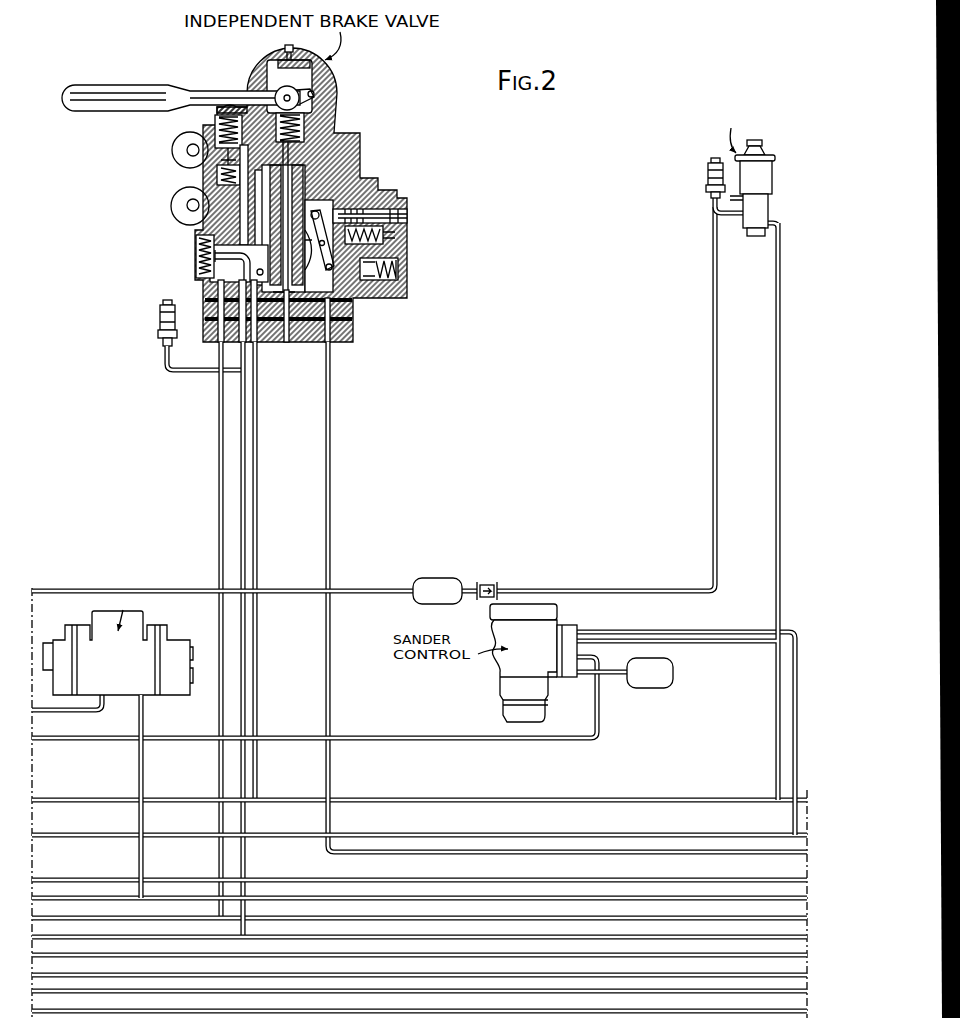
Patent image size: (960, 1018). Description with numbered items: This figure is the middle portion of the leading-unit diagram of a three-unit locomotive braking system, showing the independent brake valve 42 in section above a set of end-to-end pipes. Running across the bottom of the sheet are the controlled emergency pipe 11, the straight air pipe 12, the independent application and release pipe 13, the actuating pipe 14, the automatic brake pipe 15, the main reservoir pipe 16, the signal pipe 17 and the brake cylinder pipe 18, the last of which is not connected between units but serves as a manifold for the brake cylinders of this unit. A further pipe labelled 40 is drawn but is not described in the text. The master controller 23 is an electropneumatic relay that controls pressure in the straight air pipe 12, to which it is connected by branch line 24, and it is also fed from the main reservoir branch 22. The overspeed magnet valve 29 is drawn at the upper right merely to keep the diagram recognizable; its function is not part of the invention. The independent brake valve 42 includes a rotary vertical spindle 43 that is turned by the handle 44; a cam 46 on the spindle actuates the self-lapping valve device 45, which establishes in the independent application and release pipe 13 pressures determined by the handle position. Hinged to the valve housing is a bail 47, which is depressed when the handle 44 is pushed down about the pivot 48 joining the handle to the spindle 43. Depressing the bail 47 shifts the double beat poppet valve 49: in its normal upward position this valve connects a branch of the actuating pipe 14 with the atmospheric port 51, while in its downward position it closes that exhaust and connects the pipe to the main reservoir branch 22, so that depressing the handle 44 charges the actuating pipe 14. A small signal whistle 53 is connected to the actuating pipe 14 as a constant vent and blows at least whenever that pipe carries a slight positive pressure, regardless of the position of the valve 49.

The controlled emergency pipe 11 is at (476, 856).
The straight air pipe 12 is at (318, 901).
The independent application and release pipe 13 is at (357, 910).
The actuating pipe 14 is at (245, 487).
The automatic brake pipe 15 is at (414, 947).
The main reservoir pipe 16 is at (437, 966).
The signal pipe 17 is at (462, 983).
The brake cylinder pipe 18 is at (484, 1002).
The main reservoir branch 22 is at (258, 540).
The master controller 23 is at (119, 653).
The branch line 24 is at (144, 762).
The overspeed magnet valve 29 is at (766, 175).
The pipe 40 is at (262, 878).
The independent brake valve 42 is at (249, 210).
The rotary vertical spindle 43 is at (203, 212).
The handle 44 is at (150, 77).
The self-lapping valve device 45 is at (398, 246).
The cam 46 is at (290, 343).
The bail 47 is at (217, 110).
The pivot 48 is at (278, 95).
The double beat poppet valve 49 is at (216, 176).
The atmospheric port 51 is at (212, 156).
The signal whistle 53 is at (158, 320).